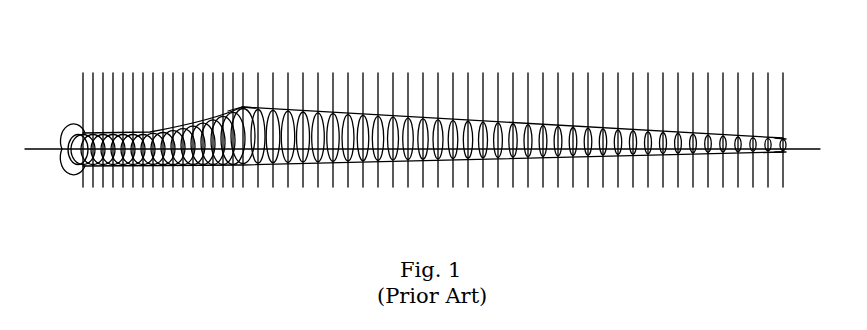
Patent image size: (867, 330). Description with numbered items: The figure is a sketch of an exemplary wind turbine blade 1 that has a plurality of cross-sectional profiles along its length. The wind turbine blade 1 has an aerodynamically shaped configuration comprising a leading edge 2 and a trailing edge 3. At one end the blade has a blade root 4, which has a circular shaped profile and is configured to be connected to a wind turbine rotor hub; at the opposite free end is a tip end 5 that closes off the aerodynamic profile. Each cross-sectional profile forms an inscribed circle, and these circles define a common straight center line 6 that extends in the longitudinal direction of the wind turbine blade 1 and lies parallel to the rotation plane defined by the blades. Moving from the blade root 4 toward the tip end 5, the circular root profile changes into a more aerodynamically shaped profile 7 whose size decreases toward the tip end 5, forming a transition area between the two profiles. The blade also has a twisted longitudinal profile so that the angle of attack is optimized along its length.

The wind turbine blade 1 is at (644, 100).
The leading edge 2 is at (546, 161).
The trailing edge 3 is at (519, 121).
The blade root 4 is at (59, 156).
The tip end 5 is at (789, 138).
The center line 6 is at (50, 148).
The aerodynamically shaped profile 7 is at (242, 107).